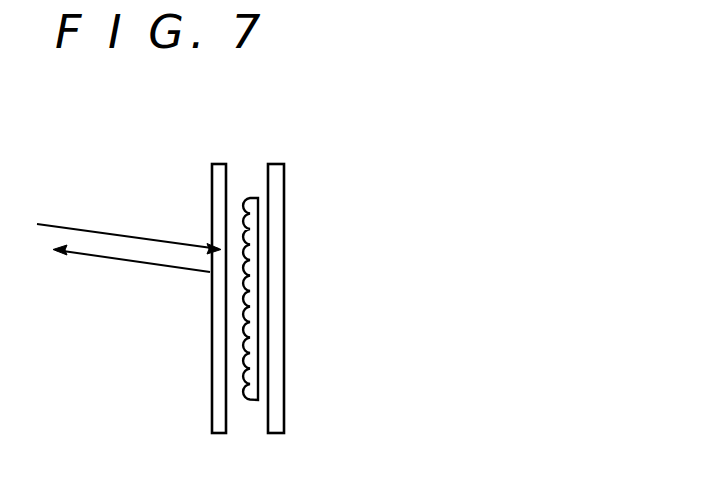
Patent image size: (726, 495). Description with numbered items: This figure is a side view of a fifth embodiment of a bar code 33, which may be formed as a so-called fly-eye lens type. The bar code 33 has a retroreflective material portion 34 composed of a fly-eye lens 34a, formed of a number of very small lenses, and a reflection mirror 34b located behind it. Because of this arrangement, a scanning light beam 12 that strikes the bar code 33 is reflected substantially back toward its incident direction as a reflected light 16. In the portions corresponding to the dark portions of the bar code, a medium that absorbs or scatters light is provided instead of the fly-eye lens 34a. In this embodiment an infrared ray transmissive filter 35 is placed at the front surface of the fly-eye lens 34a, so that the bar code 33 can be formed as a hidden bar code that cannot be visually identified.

The scanning light beam 12 is at (72, 227).
The reflected light 16 is at (97, 259).
The bar code 33 is at (339, 341).
The retroreflective material portion 34 is at (352, 298).
The fly-eye lens 34a is at (252, 268).
The reflection mirror 34b is at (285, 183).
The infrared ray transmissive filter 35 is at (220, 165).